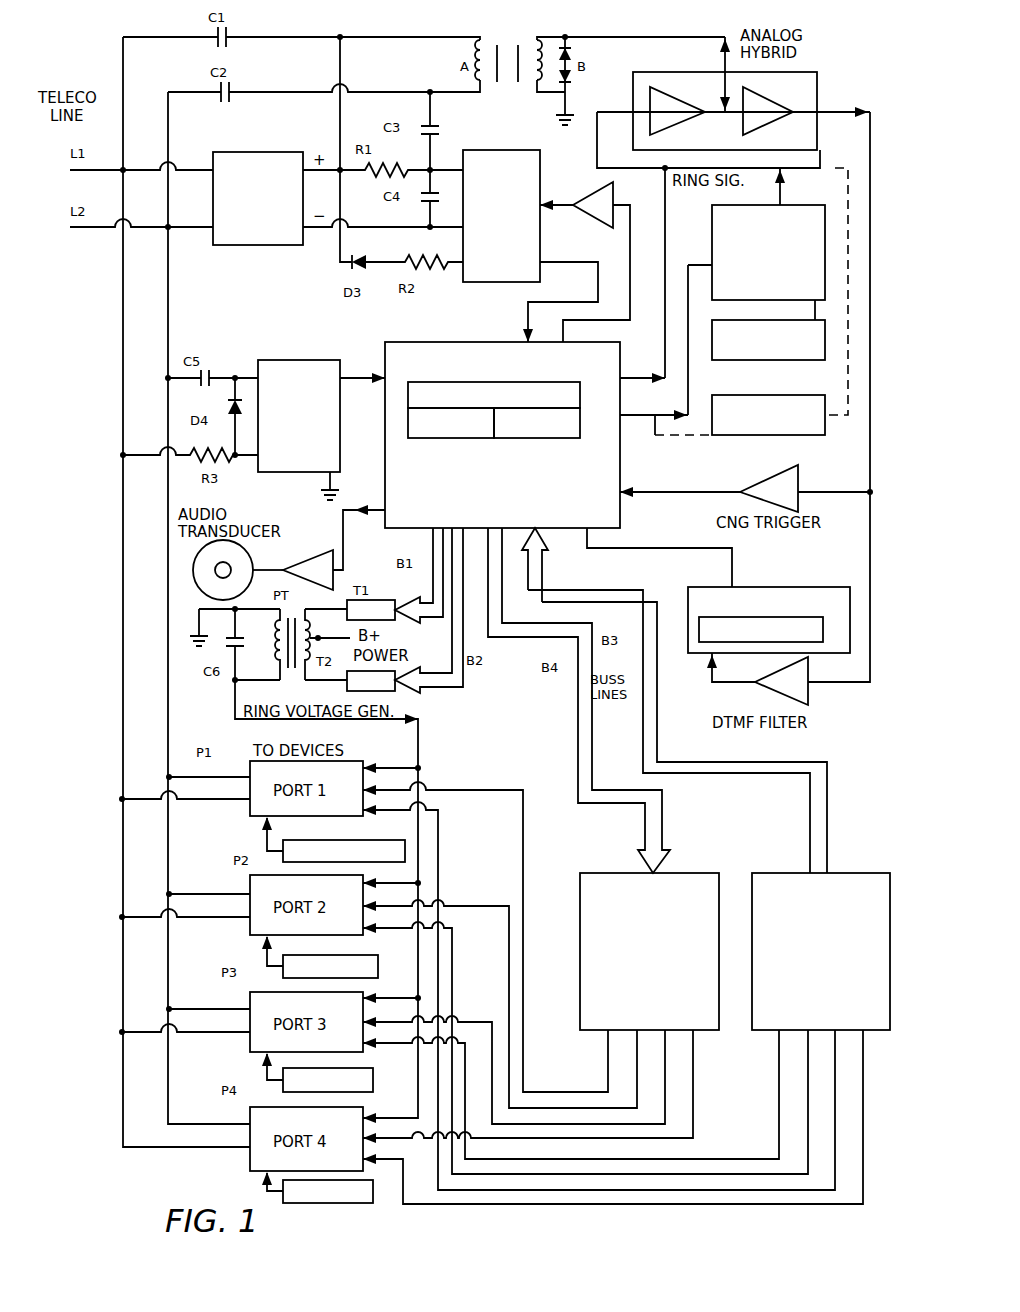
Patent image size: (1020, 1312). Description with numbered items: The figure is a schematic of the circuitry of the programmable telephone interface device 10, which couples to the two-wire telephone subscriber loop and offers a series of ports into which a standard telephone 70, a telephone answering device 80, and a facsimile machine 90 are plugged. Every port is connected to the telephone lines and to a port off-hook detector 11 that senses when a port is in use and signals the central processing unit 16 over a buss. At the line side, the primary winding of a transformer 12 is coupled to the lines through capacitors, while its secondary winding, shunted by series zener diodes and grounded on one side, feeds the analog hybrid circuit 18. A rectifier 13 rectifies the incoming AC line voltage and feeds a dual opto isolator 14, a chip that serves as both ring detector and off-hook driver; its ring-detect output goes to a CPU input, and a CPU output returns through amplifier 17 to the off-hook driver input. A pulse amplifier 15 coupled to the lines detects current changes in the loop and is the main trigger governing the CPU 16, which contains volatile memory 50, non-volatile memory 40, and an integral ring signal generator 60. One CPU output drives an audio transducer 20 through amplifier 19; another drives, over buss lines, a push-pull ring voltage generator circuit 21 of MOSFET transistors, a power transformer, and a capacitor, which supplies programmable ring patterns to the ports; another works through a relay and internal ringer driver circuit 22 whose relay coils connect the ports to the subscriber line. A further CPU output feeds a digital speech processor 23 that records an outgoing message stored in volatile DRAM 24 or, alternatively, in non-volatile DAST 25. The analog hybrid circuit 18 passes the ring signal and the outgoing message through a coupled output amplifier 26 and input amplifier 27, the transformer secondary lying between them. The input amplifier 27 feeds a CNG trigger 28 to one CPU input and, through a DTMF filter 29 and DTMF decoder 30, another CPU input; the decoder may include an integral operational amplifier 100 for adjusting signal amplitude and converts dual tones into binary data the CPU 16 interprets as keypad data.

The programmable telephone interface device 10 is at (104, 577).
The port off-hook detector 11 is at (848, 878).
The transformer 12 is at (505, 42).
The rectifier 13 is at (268, 153).
The dual opto isolator 14 is at (540, 166).
The pulse amplifier 15 is at (308, 358).
The central processing unit 16 is at (468, 338).
The amplifier 17 is at (600, 215).
The analog hybrid circuit 18 is at (820, 72).
The amplifier 19 is at (312, 550).
The audio transducer 20 is at (244, 545).
The ring voltage generator circuit 21 is at (445, 695).
The relay and internal ringer driver circuit 22 is at (672, 878).
The digital speech processor 23 is at (800, 205).
The dynamic random access memory 24 is at (795, 360).
The direct analog storage technology 25 is at (798, 435).
The output amplifier 26 is at (672, 128).
The input amplifier 27 is at (765, 128).
The CNG trigger 28 is at (772, 498).
The DTMF filter 29 is at (775, 688).
The DTMF decoder 30 is at (800, 587).
The non-volatile memory storage (ROM) 40 is at (532, 446).
The volatile memory (RAM) 50 is at (446, 446).
The ring signal generator 60 is at (460, 376).
The standard telephone 70 is at (370, 838).
The telephone answering device 80 is at (362, 978).
The facsimile machine 90 is at (350, 1208).
The integral operational amplifier (filter) 100 is at (823, 630).